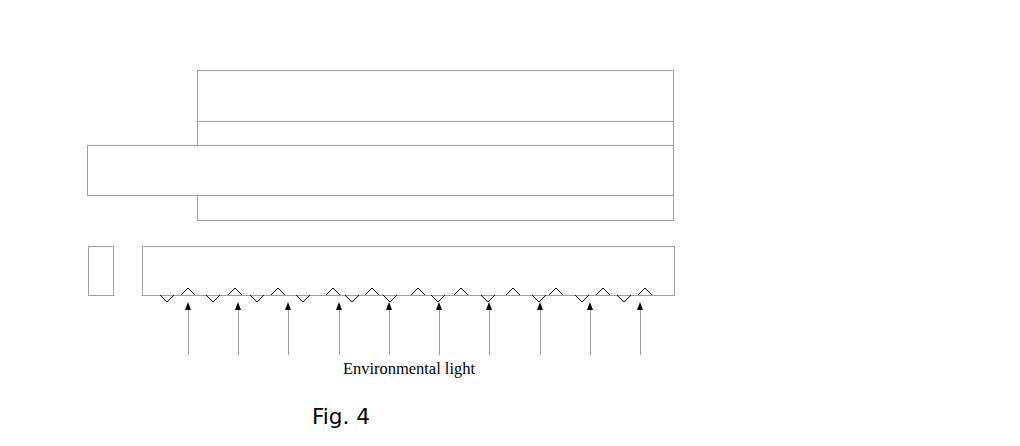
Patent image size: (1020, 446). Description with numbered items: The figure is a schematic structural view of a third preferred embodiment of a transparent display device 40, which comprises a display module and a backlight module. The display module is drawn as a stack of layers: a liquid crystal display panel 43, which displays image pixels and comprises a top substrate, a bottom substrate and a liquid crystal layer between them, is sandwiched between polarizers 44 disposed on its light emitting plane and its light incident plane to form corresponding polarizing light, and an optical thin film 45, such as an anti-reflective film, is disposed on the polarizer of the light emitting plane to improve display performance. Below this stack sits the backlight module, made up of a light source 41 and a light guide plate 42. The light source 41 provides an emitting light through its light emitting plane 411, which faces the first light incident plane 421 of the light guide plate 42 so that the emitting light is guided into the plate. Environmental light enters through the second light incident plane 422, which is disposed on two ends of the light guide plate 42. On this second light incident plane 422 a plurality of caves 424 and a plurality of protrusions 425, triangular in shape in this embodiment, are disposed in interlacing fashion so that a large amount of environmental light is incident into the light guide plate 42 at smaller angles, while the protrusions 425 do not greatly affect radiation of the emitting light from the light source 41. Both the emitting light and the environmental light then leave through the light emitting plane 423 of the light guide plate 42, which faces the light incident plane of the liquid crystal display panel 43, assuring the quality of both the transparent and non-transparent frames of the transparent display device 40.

The transparent display device 40 is at (98, 117).
The light source 41 is at (88, 268).
The light emitting plane of the light source 411 is at (113, 268).
The light guide plate 42 is at (674, 265).
The first light incident plane 421 is at (142, 268).
The second light incident plane 422 is at (658, 298).
The light emitting plane of the light guide plate 423 is at (152, 246).
The caves 424 is at (184, 297).
The protrusions 425 is at (660, 296).
The liquid crystal display panel 43 is at (673, 168).
The polarizers 44 is at (673, 132).
The optical thin film 45 is at (673, 95).